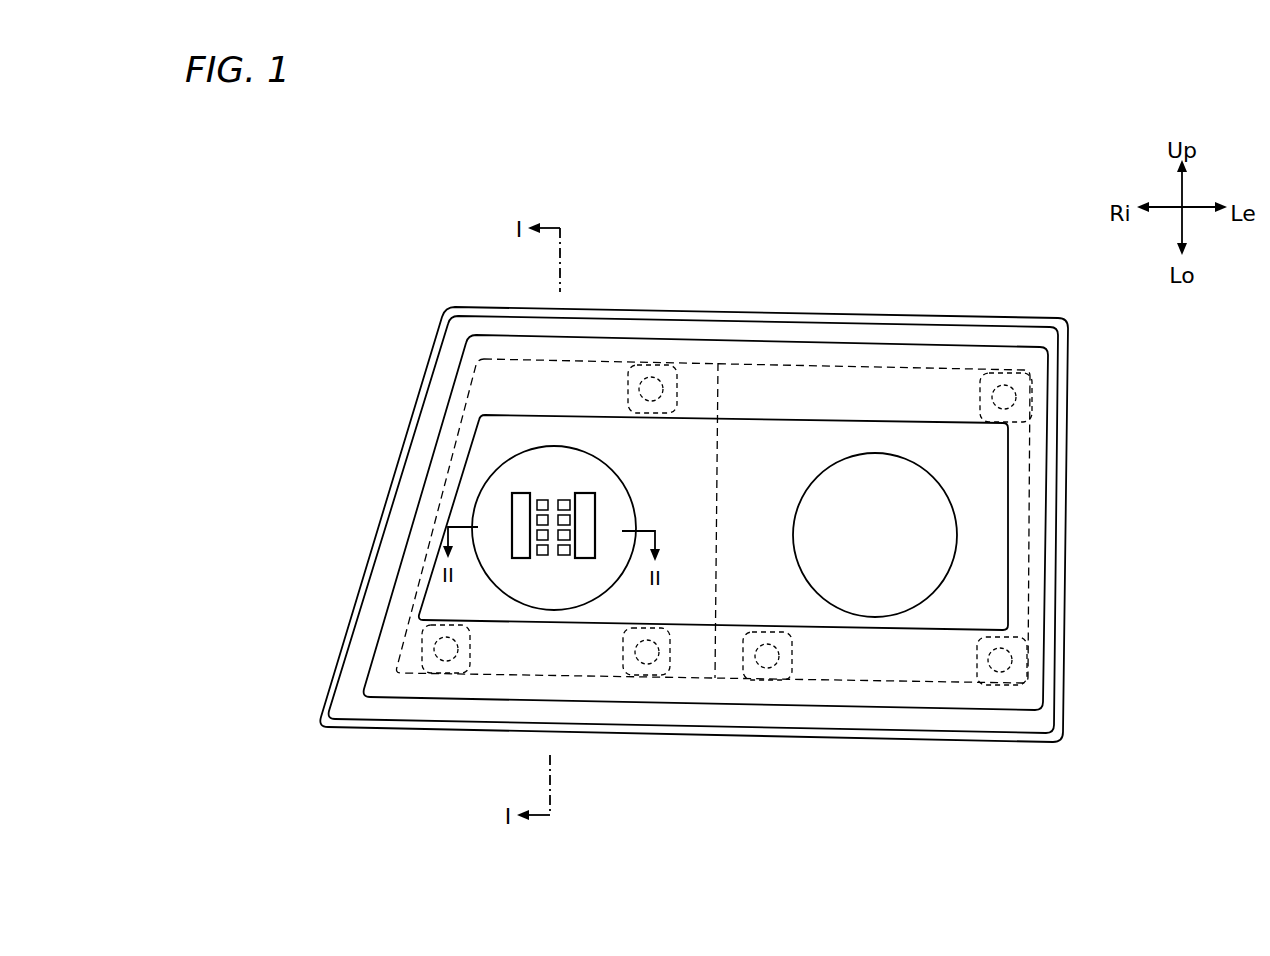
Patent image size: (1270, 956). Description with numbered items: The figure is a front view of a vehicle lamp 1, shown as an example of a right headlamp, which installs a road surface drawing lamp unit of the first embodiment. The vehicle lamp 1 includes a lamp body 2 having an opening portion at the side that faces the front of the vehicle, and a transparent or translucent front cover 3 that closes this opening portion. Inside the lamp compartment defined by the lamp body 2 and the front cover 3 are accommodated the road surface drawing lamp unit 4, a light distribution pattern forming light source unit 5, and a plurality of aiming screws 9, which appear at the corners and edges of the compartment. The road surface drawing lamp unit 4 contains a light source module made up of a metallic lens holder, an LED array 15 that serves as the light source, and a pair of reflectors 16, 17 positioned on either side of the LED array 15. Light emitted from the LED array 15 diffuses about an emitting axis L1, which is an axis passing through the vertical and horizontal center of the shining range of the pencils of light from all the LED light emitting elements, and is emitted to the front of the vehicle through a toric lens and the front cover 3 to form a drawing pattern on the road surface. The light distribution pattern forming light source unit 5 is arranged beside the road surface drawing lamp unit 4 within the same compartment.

The vehicle lamp 1 is at (615, 150).
The lamp body 2 is at (1070, 372).
The front cover 3 is at (1052, 425).
The road surface drawing lamp unit 4 is at (488, 468).
The light distribution pattern forming light source unit 5 is at (960, 487).
The aiming screws 9 is at (652, 380).
The LED array 15 is at (555, 489).
The reflector 16 is at (586, 500).
The reflector 17 is at (523, 500).
The emitting axis L1 is at (553, 525).